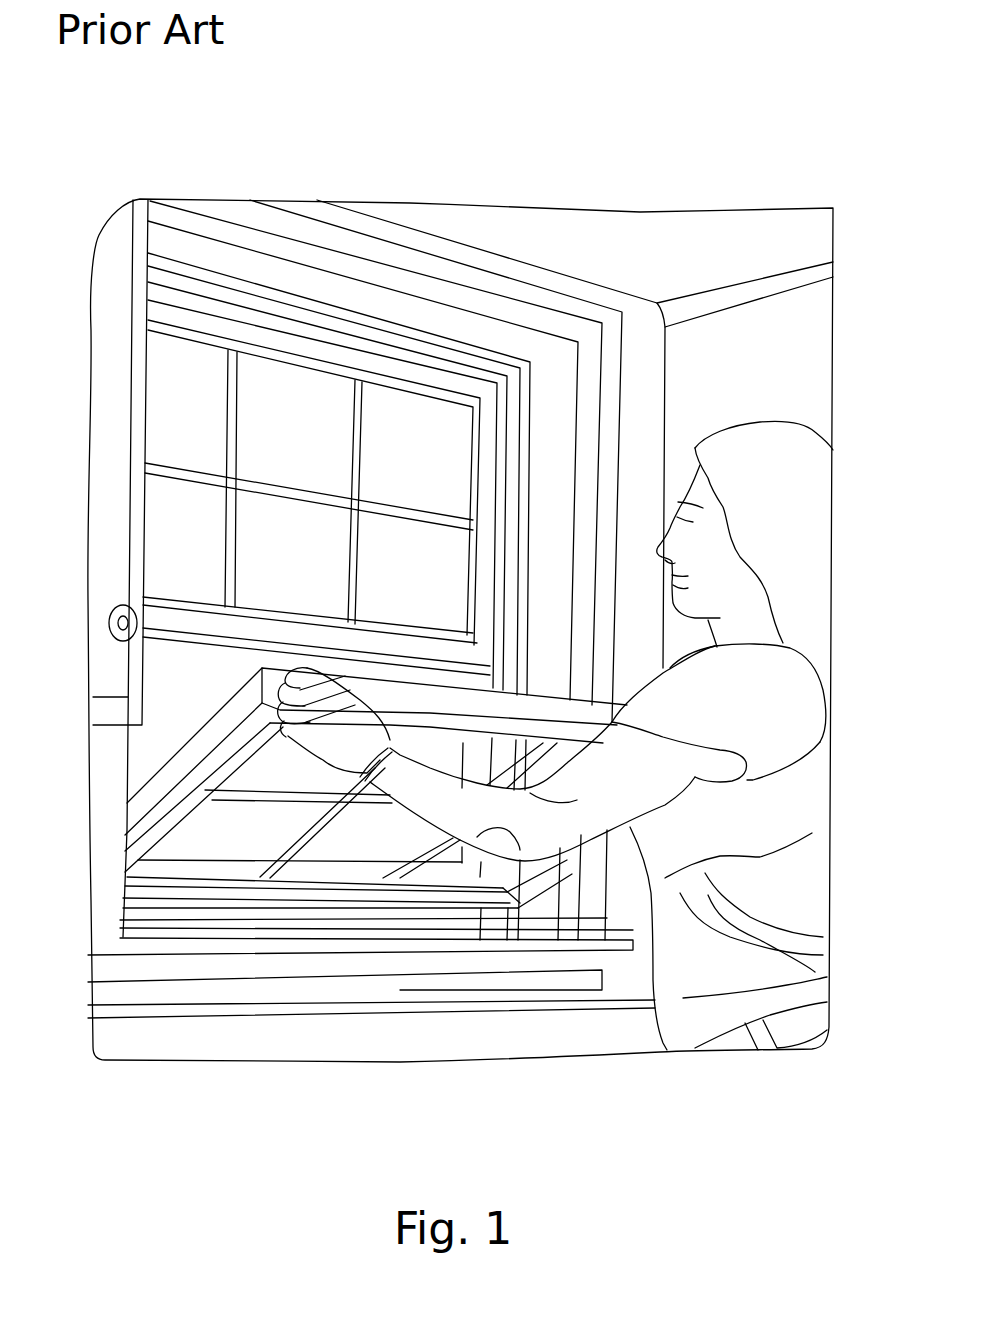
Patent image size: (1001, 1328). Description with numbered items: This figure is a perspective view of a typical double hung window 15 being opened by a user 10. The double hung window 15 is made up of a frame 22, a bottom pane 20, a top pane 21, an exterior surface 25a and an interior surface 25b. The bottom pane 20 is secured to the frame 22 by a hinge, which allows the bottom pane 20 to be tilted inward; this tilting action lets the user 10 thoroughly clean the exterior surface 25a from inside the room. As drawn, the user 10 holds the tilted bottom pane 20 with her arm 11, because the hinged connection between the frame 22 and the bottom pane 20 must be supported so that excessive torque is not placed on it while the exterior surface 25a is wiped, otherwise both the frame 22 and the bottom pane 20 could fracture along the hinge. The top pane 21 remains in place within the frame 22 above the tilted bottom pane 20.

The user 10 is at (796, 783).
The arm 11 is at (536, 830).
The double hung window 15 is at (648, 388).
The bottom pane 20 is at (171, 812).
The top pane 21 is at (174, 530).
The frame 22 is at (492, 343).
The exterior surface 25a is at (197, 730).
The interior surface 25b is at (237, 837).